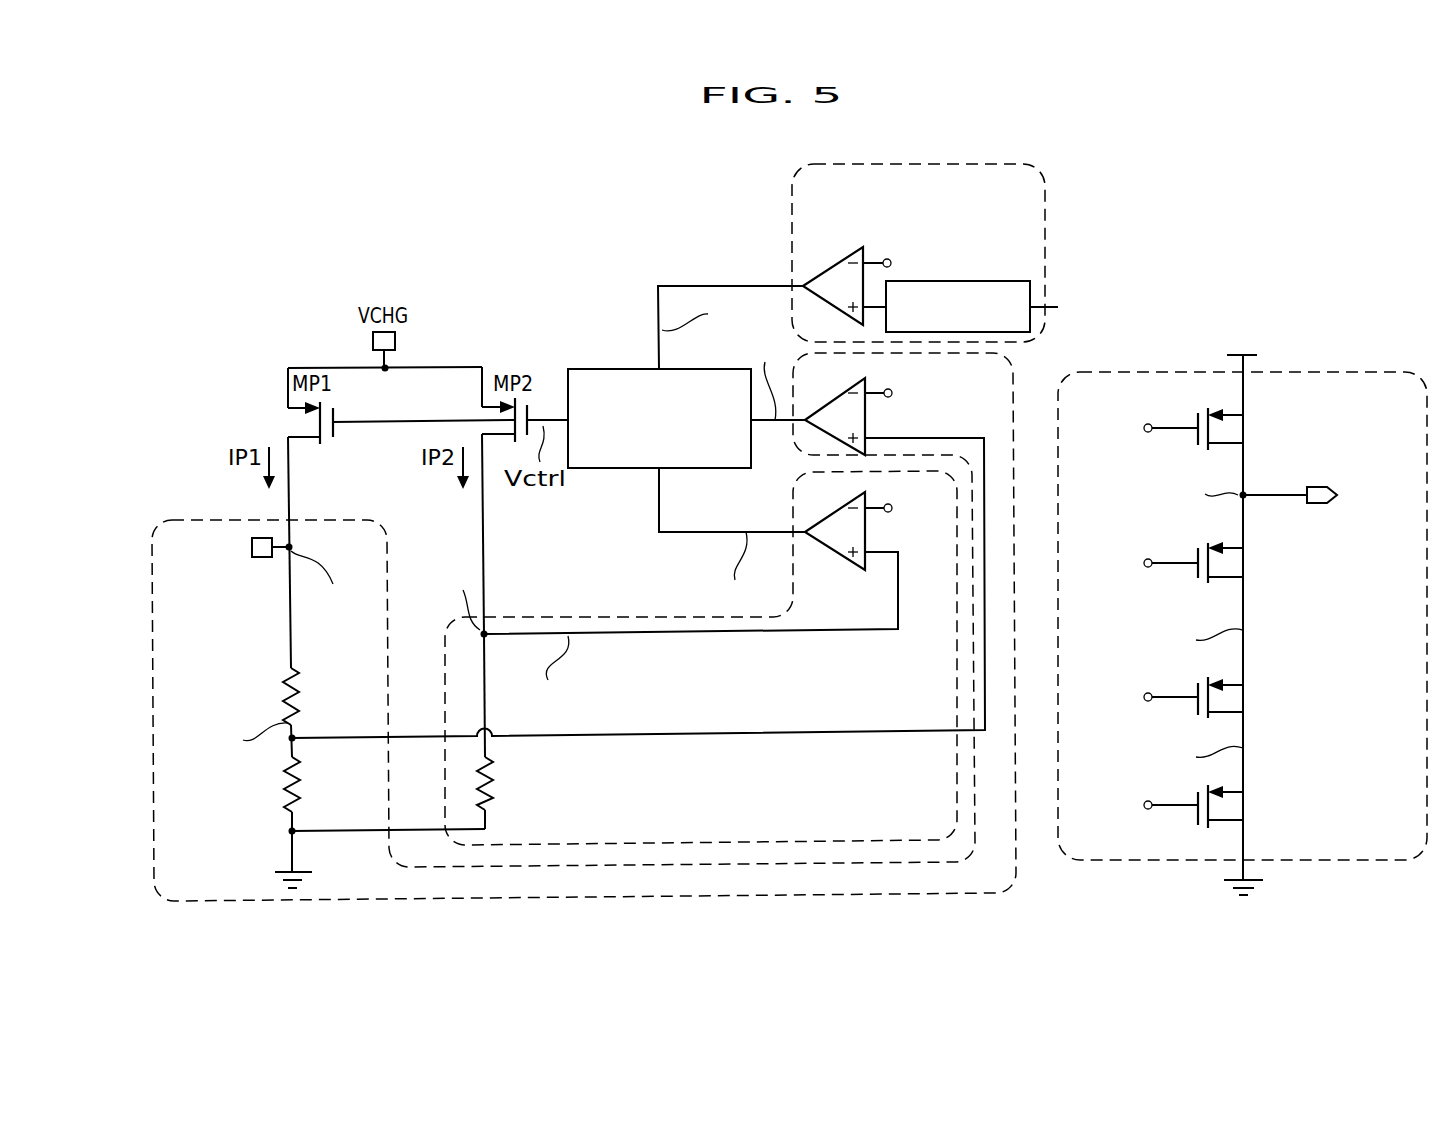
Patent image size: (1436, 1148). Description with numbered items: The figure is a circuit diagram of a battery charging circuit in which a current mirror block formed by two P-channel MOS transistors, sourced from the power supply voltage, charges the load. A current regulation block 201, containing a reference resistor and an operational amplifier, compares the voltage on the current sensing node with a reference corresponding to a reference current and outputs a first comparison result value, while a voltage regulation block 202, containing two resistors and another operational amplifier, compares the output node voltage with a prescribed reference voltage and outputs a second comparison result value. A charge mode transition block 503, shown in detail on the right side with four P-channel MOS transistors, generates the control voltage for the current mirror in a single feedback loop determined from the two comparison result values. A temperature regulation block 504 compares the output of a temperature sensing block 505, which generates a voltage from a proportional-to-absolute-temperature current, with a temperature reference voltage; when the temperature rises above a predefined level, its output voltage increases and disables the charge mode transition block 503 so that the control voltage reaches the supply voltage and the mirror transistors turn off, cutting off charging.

The current regulation block 201 is at (618, 617).
The voltage regulation block 202 is at (208, 519).
The charge mode transition block 503 is at (615, 368).
The temperature regulation block 504 is at (792, 243).
The temperature sensing block 505 is at (1058, 306).